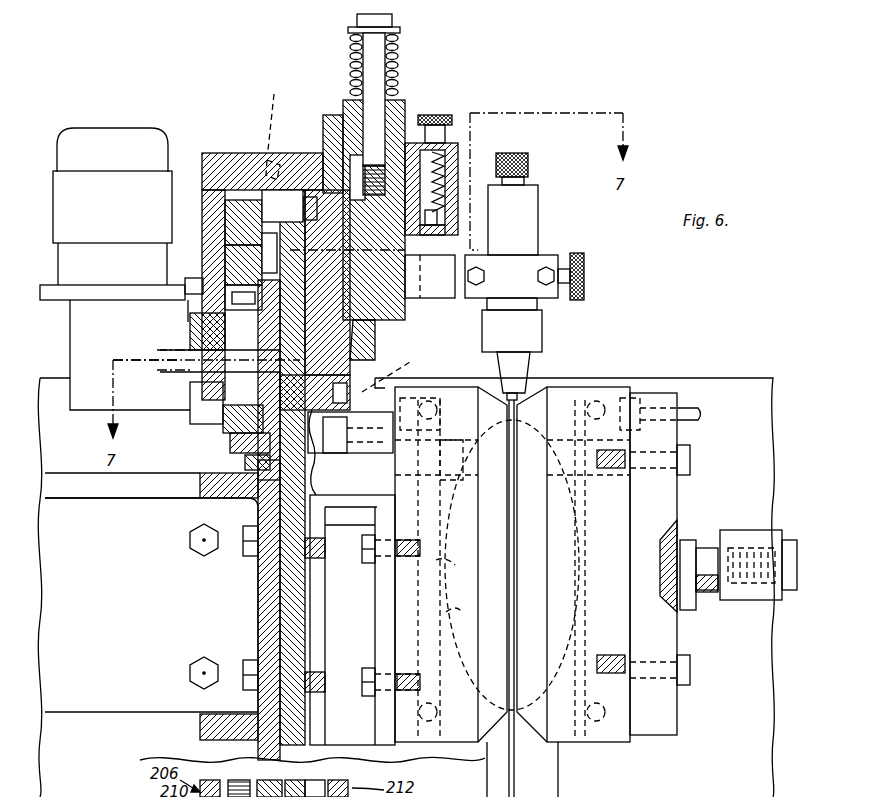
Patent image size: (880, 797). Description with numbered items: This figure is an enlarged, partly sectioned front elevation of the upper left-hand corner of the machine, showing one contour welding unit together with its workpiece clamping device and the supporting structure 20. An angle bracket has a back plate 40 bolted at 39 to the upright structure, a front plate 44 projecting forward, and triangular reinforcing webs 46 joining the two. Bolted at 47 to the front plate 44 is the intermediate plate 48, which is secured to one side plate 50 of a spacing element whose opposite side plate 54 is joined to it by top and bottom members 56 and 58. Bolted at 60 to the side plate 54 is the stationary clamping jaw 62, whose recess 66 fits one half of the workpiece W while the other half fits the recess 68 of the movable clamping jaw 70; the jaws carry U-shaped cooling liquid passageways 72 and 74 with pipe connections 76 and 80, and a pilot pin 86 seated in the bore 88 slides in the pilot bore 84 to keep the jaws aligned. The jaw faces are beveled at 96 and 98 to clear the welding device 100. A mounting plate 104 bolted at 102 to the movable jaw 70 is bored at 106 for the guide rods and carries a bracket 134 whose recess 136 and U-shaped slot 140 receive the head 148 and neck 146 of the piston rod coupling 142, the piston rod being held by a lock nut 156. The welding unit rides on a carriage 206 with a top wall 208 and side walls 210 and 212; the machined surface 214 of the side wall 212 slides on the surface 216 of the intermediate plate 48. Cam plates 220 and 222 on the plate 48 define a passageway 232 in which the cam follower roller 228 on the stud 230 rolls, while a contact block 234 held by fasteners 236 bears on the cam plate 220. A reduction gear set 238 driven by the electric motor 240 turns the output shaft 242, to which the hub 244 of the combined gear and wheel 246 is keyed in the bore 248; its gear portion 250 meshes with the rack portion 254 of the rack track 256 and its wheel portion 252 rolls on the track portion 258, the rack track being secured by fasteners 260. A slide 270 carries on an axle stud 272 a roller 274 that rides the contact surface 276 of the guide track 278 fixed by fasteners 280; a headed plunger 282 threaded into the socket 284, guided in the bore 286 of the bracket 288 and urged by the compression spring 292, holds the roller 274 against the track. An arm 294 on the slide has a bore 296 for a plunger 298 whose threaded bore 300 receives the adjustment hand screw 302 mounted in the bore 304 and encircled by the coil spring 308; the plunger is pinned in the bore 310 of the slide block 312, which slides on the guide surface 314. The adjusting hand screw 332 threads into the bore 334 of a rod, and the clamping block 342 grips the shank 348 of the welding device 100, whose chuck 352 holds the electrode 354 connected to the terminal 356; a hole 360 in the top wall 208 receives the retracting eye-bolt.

The frame 20 is at (744, 372).
The bolted connection 39 is at (210, 556).
The back plate 40 is at (52, 592).
The front plate 44 is at (256, 612).
The reinforcing webs 46 is at (90, 494).
The bolted connection 47 is at (246, 556).
The intermediate plate 48 is at (325, 750).
The side plate 50 is at (314, 614).
The opposite side plate 54 is at (393, 744).
The top member 56 is at (362, 541).
The bottom member 58 is at (346, 686).
The bolted connection 60 is at (366, 562).
The stationary clamping jaw 62 is at (448, 740).
The recess 66 is at (458, 624).
The recess 68 is at (512, 565).
The movable clamping jaw 70 is at (604, 748).
The cooling liquid passageway 72 is at (451, 580).
The cooling liquid passageway 74 is at (634, 494).
The upper pipe connection 76 is at (436, 564).
The pipe connection 80 is at (640, 400).
The pilot bore 84 is at (446, 448).
The pilot pin 86 is at (448, 480).
The aligned bore 88 is at (584, 440).
The bevel 96 is at (492, 744).
The bevel 98 is at (562, 745).
The welding device 100 is at (544, 190).
The bolted connection 102 is at (690, 458).
The mounting plate 104 is at (680, 720).
The bore 106 is at (657, 573).
The bracket 134 is at (708, 592).
The recess 136 is at (686, 540).
The U-shaped slot 140 is at (704, 598).
The piston rod coupling 142 is at (750, 526).
The neck portion 146 is at (711, 569).
The head 148 is at (700, 592).
The lock nut 156 is at (790, 540).
The carriage 206 is at (205, 146).
The horizontal top wall 208 is at (228, 160).
The carriage side wall 210 is at (206, 176).
The carriage side wall 212 is at (322, 190).
The machined inner surface 214 is at (300, 180).
The machined surface 216 is at (255, 572).
The cam plate 220 is at (255, 160).
The cam plate 222 is at (265, 468).
The cam follower roller 228 is at (240, 275).
The stud 230 is at (184, 284).
The passageway 232 is at (232, 250).
The contact block 234 is at (246, 200).
The fasteners 236 is at (215, 216).
The reduction gear set 238 is at (64, 348).
The electric driving motor 240 is at (52, 225).
The output shaft 242 is at (190, 380).
The hub 244 is at (190, 340).
The combined gear and wheel 246 is at (230, 440).
The bore 248 is at (195, 418).
The gear portion 250 is at (236, 445).
The wheel portion 252 is at (243, 297).
The rack portion 254 is at (250, 460).
The rack track 256 is at (248, 505).
The track portion 258 is at (252, 538).
The fasteners 260 is at (215, 528).
The slide 270 is at (380, 334).
The axle stud 272 is at (380, 453).
The roller 274 is at (330, 462).
The contact surface 276 is at (354, 499).
The guide track 278 is at (315, 385).
The fasteners 280 is at (400, 372).
The headed plunger 282 is at (380, 112).
The threaded socket 284 is at (380, 168).
The bore 286 is at (326, 120).
The bracket 288 is at (345, 108).
The compression spring 292 is at (400, 48).
The arm 294 is at (445, 230).
The vertical bore 296 is at (440, 213).
The plunger 298 is at (445, 245).
The threaded vertical bore 300 is at (448, 189).
The adjustment hand screw 302 is at (458, 140).
The bore 304 is at (450, 122).
The compression coil spring 308 is at (446, 162).
The vertical bore 310 is at (444, 298).
The slide block 312 is at (448, 322).
The machined vertical guide surface 314 is at (380, 330).
The adjusting hand screw 332 is at (586, 268).
The threaded bore 334 is at (548, 290).
The clamping block 342 is at (556, 260).
The cylindrical shank 348 is at (540, 212).
The chuck 352 is at (520, 385).
The welding electrode 354 is at (540, 398).
The terminal 356 is at (528, 156).
The hole 360 is at (276, 130).
The workpiece W is at (588, 785).